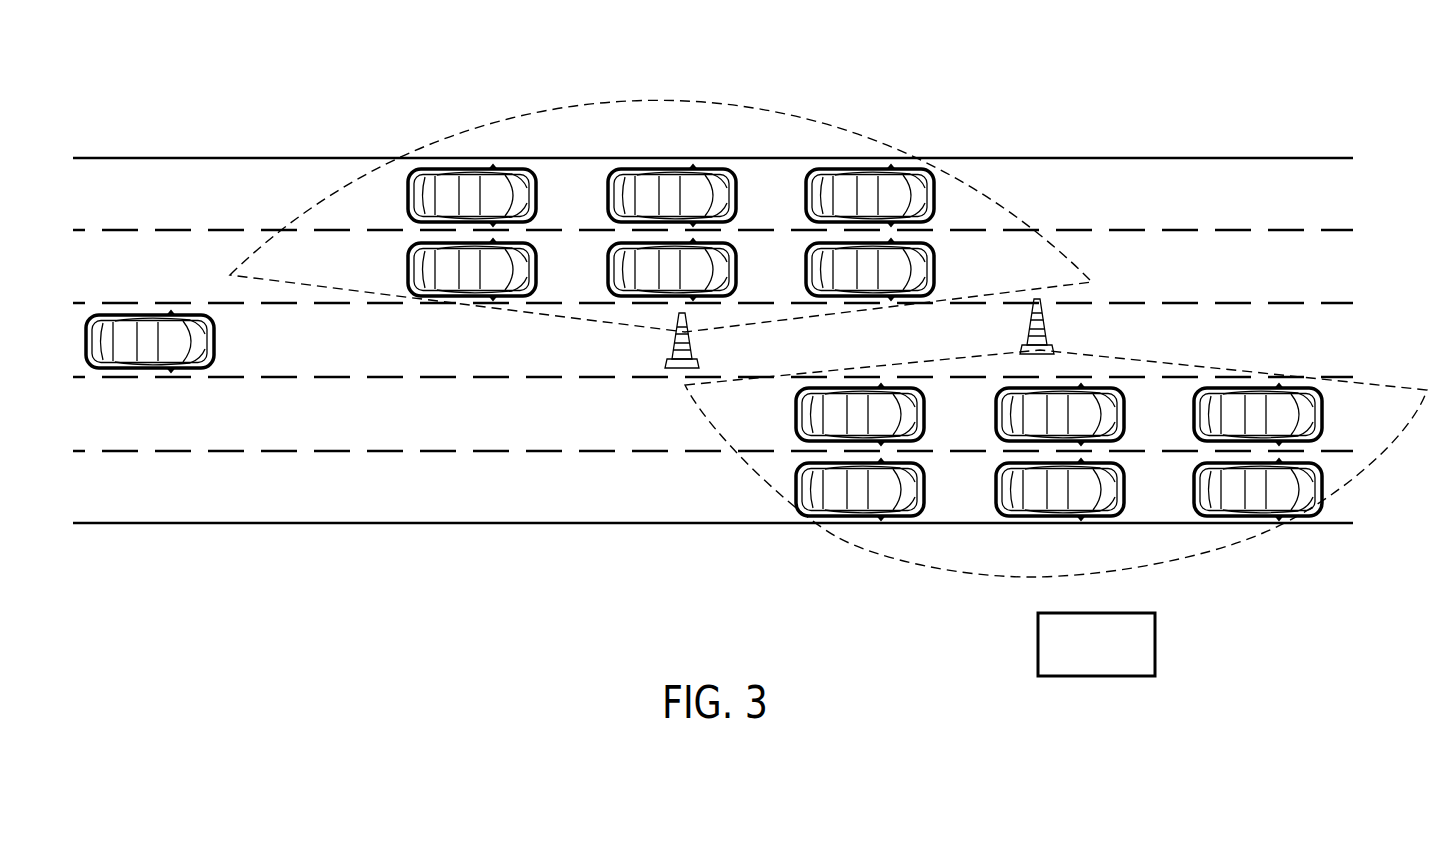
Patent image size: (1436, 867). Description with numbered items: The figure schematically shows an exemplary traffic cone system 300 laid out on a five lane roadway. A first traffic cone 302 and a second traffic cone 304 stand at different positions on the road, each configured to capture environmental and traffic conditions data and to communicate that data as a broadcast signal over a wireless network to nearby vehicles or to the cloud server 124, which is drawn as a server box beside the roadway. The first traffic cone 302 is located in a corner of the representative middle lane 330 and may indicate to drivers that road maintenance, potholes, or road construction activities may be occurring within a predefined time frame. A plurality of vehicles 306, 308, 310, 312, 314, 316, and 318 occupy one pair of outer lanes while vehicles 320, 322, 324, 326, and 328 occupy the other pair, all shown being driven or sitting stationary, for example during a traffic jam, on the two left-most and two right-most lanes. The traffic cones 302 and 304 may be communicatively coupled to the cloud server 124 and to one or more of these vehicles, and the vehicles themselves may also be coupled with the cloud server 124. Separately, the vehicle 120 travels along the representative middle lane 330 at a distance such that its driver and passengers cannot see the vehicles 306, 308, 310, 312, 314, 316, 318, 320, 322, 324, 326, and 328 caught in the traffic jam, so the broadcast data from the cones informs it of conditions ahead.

The traffic cone system 300 is at (188, 98).
The vehicle 120 is at (140, 320).
The cloud server 124 is at (1038, 644).
The first traffic cone 302 is at (1036, 299).
The second traffic cone 304 is at (681, 368).
The vehicle 306 is at (1250, 392).
The vehicle 308 is at (1293, 514).
The vehicle 310 is at (1008, 392).
The vehicle 312 is at (1050, 514).
The vehicle 314 is at (848, 392).
The vehicle 316 is at (850, 514).
The vehicle 318 is at (906, 178).
The vehicle 320 is at (906, 292).
The vehicle 322 is at (662, 175).
The vehicle 324 is at (640, 292).
The vehicle 326 is at (455, 172).
The vehicle 328 is at (466, 292).
The representative middle lane 330 is at (1346, 337).